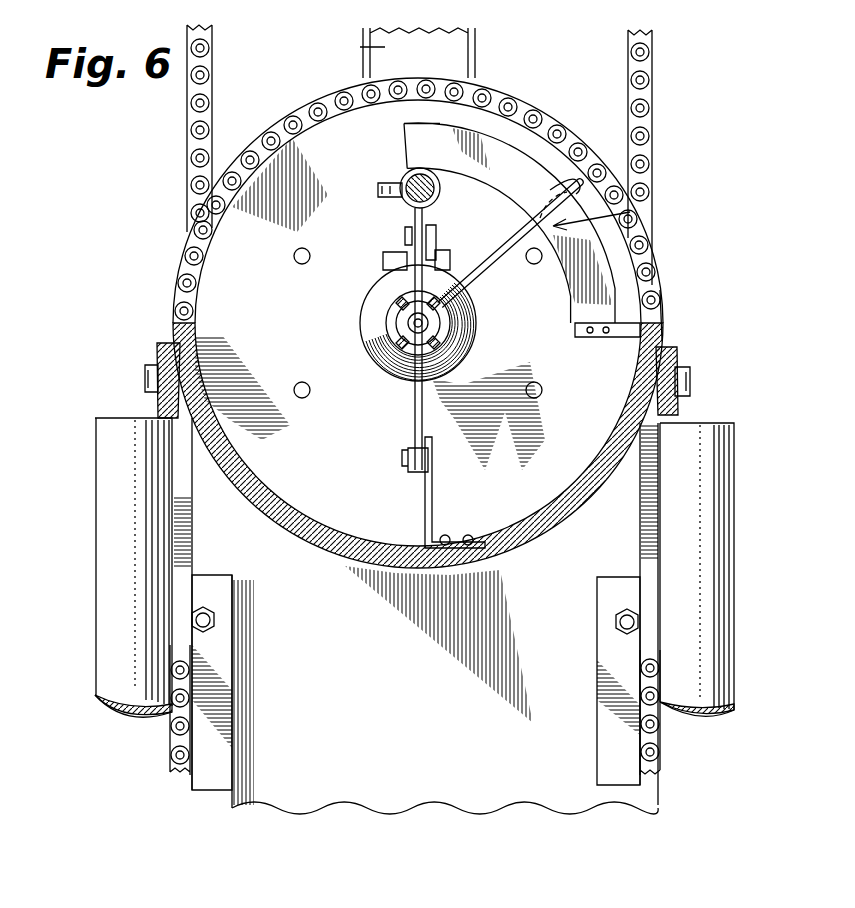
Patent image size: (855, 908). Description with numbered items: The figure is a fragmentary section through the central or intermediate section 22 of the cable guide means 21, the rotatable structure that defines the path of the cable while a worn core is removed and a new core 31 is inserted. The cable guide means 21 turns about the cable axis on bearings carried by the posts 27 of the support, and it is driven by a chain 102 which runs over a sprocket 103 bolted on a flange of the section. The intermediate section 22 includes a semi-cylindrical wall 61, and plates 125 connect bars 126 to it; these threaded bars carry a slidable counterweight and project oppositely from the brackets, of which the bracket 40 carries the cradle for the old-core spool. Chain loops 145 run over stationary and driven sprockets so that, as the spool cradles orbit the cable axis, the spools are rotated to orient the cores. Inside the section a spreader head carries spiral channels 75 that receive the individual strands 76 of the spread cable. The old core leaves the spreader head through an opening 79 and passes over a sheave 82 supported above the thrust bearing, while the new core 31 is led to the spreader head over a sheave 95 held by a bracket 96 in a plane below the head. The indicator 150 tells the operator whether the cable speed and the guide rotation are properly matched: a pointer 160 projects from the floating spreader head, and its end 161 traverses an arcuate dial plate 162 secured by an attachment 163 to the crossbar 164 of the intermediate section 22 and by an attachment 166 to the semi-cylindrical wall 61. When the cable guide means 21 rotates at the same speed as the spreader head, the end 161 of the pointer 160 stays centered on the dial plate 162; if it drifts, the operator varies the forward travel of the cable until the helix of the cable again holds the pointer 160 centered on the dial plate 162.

The cable guide means 21 is at (686, 259).
The central or intermediate section 22 is at (342, 560).
The posts 27 is at (432, 782).
The new core 31 is at (416, 420).
The bracket 40 is at (368, 47).
The semi-cylindrical wall 61 is at (255, 485).
The spiral guides or channels 75 is at (392, 330).
The strands 76 is at (413, 337).
The opening 79 is at (400, 303).
The sheave 82 is at (412, 214).
The sheave 95 is at (408, 462).
The bracket 96 is at (432, 510).
The chain 102 is at (183, 745).
The sprocket 103 is at (330, 135).
The plates 125 is at (156, 410).
The bars 126 is at (118, 612).
The chain loops 145 is at (200, 110).
The indicator 150 is at (630, 212).
The pointer 160 is at (495, 263).
The end of pointer 161 is at (578, 172).
The arcuate dial plate 162 is at (512, 160).
The attachment 163 is at (395, 185).
The crossbar 164 is at (440, 196).
The attachment 166 is at (620, 343).